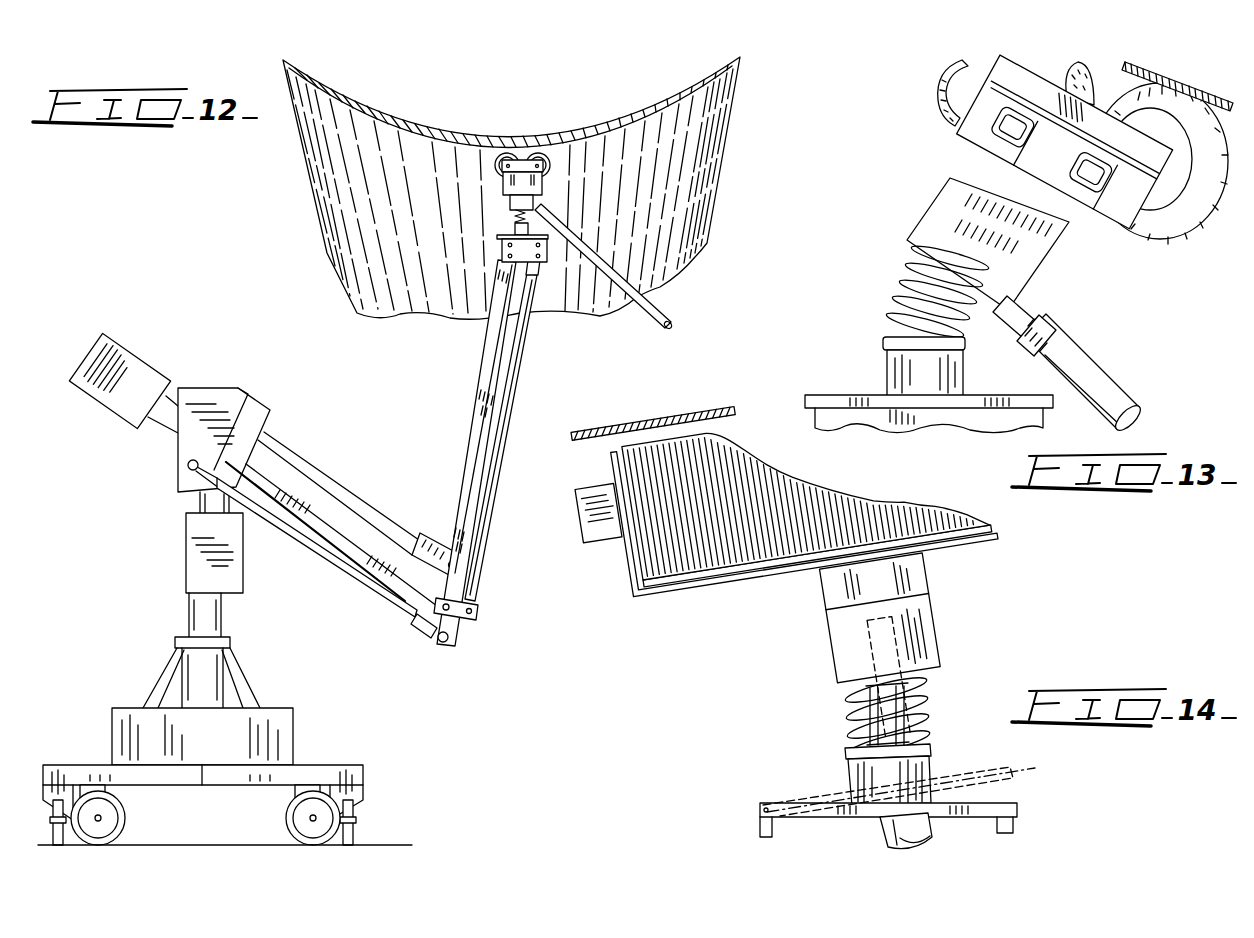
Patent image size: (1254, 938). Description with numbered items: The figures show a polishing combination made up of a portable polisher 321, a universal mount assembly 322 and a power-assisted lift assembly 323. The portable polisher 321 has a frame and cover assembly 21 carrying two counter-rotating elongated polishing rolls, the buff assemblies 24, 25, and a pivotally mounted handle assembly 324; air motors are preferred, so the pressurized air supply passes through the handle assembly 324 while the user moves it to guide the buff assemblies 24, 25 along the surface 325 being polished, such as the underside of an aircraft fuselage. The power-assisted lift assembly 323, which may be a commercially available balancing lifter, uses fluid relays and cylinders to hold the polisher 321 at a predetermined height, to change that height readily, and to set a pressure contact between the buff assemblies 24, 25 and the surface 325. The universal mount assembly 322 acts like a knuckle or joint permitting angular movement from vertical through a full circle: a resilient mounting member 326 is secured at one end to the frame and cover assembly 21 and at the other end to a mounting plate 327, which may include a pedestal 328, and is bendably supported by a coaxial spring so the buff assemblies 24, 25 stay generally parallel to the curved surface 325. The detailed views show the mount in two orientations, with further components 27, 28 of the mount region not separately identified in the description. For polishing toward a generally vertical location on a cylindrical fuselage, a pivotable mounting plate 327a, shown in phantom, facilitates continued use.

In FIG. 13, the frame and cover assembly 21 is at (1110, 222).
In FIG. 14, the frame and cover assembly 21 is at (934, 615).
In FIG. 12, the buff assembly 24 is at (542, 153).
In FIG. 13, the buff assembly 24 is at (1196, 226).
In FIG. 12, the buff assembly 25 is at (501, 153).
In FIG. 13, the buff assembly 25 is at (938, 93).
In FIG. 14, the buff assembly 25 is at (760, 509).
In FIG. 14, the backing plate 27 is at (748, 582).
In FIG. 14, the mounting frame 28 is at (622, 572).
In FIG. 12, the portable polisher 321 is at (499, 201).
In FIG. 13, the portable polisher 321 is at (960, 163).
In FIG. 14, the portable polisher 321 is at (783, 588).
In FIG. 12, the universal mount assembly 322 is at (501, 220).
In FIG. 13, the universal mount assembly 322 is at (860, 329).
In FIG. 14, the universal mount assembly 322 is at (826, 736).
In FIG. 12, the power-assisted lift assembly 323 is at (366, 613).
In FIG. 12, the handle assembly 324 is at (651, 320).
In FIG. 13, the handle assembly 324 is at (1096, 383).
In FIG. 14, the handle assembly 324 is at (880, 834).
In FIG. 12, the surface being polished 325 is at (639, 160).
In FIG. 13, the surface being polished 325 is at (1210, 97).
In FIG. 14, the surface being polished 325 is at (607, 428).
In FIG. 13, the resilient mounting member 326 is at (914, 290).
In FIG. 14, the resilient mounting member 326 is at (914, 712).
In FIG. 13, the mounting plate 327 is at (805, 400).
In FIG. 14, the mounting plate 327 is at (760, 806).
In FIG. 14, the pivotable mounting plate 327a is at (1036, 770).
In FIG. 14, the pedestal 328 is at (846, 775).